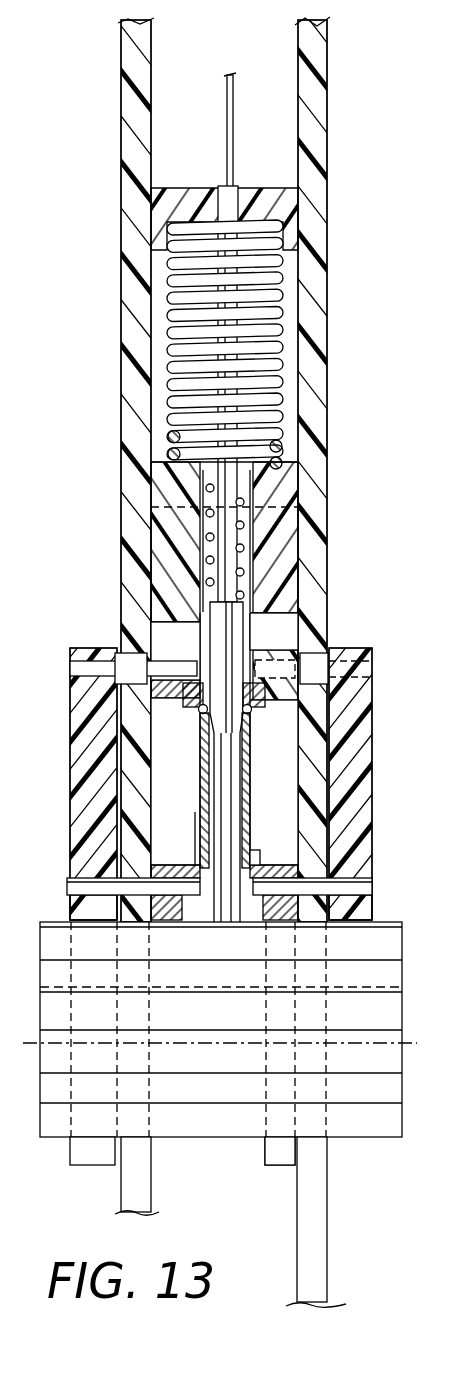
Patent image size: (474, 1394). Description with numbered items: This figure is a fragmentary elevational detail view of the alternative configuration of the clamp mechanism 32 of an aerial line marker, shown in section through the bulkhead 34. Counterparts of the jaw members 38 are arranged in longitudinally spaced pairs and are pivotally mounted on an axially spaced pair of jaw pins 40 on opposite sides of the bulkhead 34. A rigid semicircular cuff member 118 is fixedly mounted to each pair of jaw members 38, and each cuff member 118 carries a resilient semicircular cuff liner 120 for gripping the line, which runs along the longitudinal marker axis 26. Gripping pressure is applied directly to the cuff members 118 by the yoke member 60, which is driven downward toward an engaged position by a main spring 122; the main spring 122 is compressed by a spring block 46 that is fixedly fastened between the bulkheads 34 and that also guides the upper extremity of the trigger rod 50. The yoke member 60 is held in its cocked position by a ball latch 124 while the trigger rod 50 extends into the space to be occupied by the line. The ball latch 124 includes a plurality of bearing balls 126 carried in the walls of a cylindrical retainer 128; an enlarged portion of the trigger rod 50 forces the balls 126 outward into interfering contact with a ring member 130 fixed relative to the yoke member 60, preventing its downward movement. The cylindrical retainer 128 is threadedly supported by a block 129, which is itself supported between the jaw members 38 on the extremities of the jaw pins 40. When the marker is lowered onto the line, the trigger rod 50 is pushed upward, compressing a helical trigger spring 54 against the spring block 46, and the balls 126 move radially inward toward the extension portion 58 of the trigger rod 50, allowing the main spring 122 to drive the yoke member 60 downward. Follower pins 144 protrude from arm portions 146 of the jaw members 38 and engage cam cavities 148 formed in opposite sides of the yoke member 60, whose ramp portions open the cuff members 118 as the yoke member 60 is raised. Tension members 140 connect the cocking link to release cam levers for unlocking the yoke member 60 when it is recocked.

The tension members 140 is at (233, 104).
The spring block 46 is at (173, 188).
The trigger rod 50 is at (234, 186).
The main spring 122 is at (166, 422).
The yoke member 60 is at (151, 516).
The trigger spring 54 is at (245, 573).
The cam cavities 148 is at (162, 622).
The follower pins 144 is at (224, 646).
The arm portions 146 is at (70, 745).
The ball latch 124 is at (200, 713).
The cylindrical retainer 128 is at (250, 736).
The ring member 130 is at (199, 712).
The bearing balls 126 is at (250, 712).
The extension portion 58 is at (207, 802).
The jaw members 38 is at (195, 862).
The block 129 is at (257, 867).
The jaw pins 40 is at (67, 879).
The cuff liner 120 is at (233, 1101).
The longitudinal marker axis 26 is at (221, 1052).
The cuff member 118 is at (218, 1140).
The bulkhead 34 is at (120, 1215).
The clamp mechanism 32 is at (270, 1218).